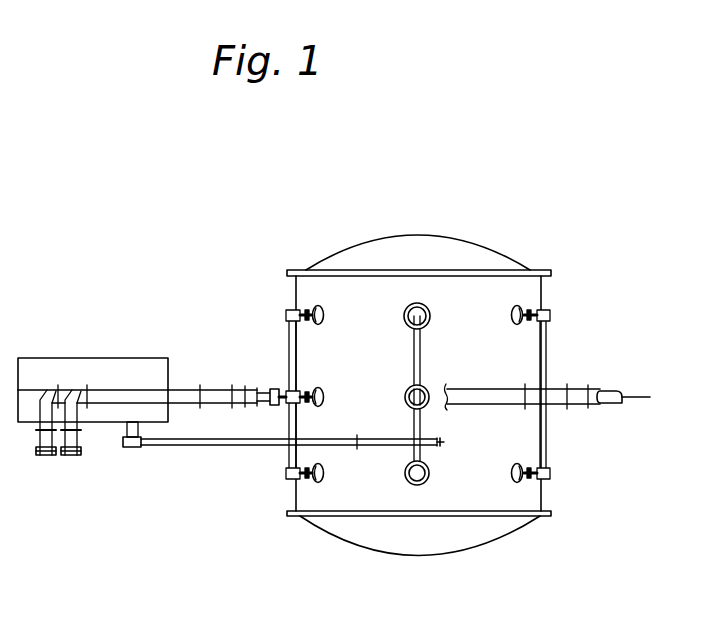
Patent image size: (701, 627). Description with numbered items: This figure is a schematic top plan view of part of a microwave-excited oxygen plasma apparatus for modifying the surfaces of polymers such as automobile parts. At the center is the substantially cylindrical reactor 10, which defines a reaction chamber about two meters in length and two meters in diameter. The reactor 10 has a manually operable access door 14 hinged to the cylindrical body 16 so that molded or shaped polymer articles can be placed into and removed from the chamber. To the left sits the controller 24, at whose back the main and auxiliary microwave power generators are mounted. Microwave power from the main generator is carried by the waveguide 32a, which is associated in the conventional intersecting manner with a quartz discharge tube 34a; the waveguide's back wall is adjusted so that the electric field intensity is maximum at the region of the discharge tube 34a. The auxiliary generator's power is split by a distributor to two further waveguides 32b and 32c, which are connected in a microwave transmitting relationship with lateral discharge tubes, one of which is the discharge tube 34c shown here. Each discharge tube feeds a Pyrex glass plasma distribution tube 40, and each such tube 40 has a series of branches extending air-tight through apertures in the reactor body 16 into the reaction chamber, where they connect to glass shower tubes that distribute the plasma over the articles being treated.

The reactor 10 is at (531, 236).
The access door 14 is at (466, 539).
The cylindrical body 16 is at (383, 498).
The controller 24 is at (100, 352).
The waveguide 32a is at (185, 448).
The waveguide 32b is at (215, 389).
The waveguide 32c is at (489, 388).
The quartz discharge tube 34a is at (422, 426).
The lateral discharge tube 34c is at (612, 405).
The plasma distribution tube 40 is at (290, 350).